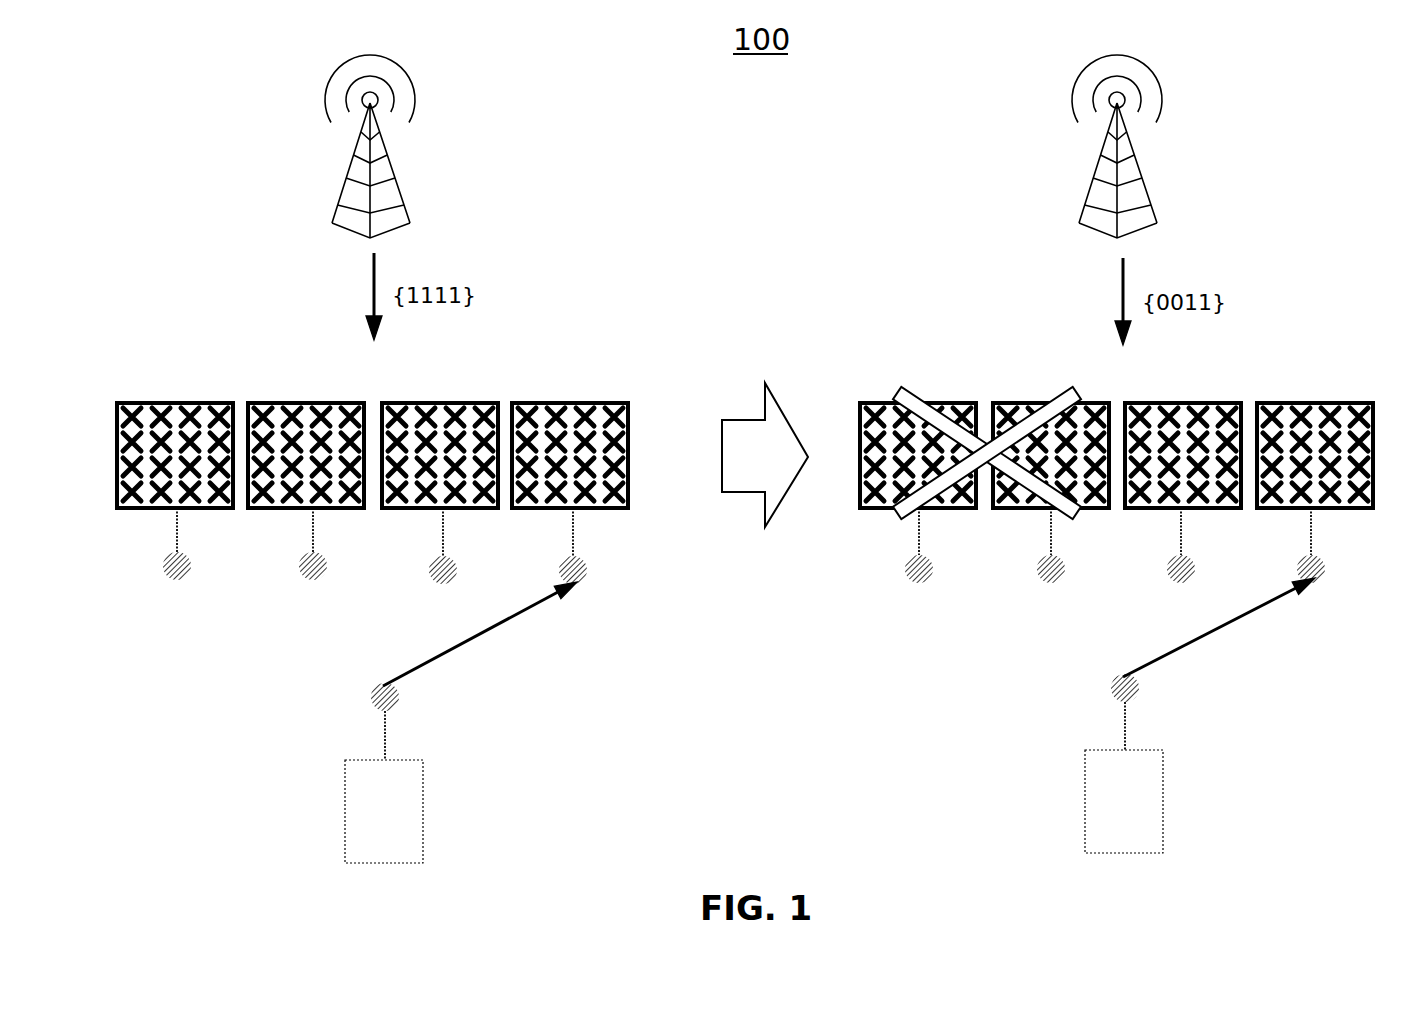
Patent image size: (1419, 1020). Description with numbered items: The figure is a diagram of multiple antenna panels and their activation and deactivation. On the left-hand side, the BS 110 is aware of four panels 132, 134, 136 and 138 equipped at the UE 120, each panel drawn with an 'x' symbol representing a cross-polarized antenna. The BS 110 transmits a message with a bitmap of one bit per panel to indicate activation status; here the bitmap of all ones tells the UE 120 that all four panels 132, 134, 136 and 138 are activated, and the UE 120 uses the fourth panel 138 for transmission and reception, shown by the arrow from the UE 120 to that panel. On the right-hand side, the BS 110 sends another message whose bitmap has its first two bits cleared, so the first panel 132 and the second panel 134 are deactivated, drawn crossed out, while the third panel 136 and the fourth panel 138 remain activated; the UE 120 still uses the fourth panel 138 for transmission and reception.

The BS 110 is at (400, 180).
The UE 120 is at (420, 828).
The panel #1 132 is at (172, 403).
The panel #2 134 is at (310, 403).
The panel #3 136 is at (442, 403).
The panel #4 138 is at (570, 403).